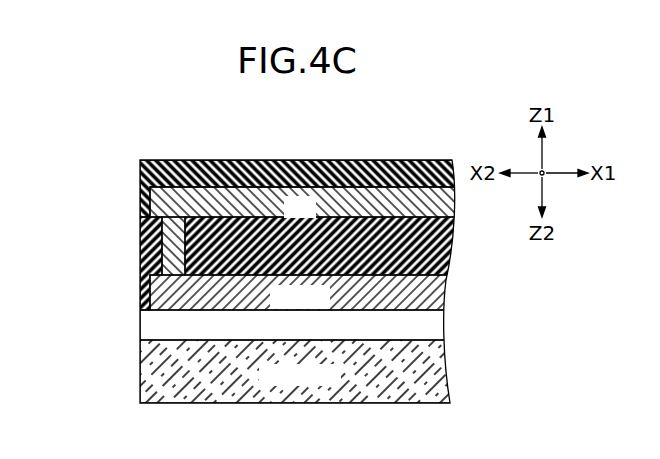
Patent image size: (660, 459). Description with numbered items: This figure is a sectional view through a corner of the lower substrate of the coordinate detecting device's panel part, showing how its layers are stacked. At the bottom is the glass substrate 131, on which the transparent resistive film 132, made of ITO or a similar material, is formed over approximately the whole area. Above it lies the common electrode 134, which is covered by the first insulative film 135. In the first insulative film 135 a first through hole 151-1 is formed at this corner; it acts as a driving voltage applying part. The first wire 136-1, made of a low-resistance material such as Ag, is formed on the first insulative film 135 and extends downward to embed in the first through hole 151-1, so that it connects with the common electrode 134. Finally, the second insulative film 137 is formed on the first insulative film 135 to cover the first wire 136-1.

The glass substrate 131 is at (137, 362).
The transparent resistive film 132 is at (137, 322).
The common electrode 134 is at (137, 283).
The first insulative film 135 is at (137, 228).
The first wire 136-1 is at (137, 197).
The second insulative film 137 is at (137, 165).
The first through hole 151-1 is at (175, 216).